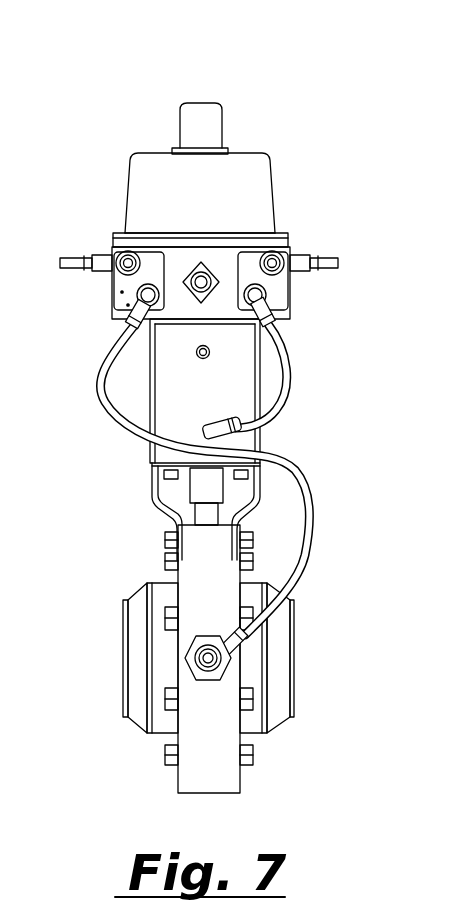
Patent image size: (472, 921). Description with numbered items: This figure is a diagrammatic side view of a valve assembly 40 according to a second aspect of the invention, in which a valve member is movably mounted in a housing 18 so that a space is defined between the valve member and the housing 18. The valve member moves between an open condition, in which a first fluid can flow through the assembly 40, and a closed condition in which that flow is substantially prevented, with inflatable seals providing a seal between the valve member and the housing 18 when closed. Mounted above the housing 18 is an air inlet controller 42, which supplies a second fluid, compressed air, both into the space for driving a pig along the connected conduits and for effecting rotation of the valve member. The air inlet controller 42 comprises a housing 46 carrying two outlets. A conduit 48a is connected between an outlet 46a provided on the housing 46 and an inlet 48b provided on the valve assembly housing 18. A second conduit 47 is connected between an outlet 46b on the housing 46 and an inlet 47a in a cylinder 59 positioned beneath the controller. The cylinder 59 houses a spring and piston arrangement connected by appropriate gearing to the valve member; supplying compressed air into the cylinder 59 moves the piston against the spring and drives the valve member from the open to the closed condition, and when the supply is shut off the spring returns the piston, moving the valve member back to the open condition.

The valve assembly 40 is at (131, 104).
The air inlet controller 42 is at (306, 210).
The housing 46 is at (253, 168).
The outlet 46a is at (132, 308).
The outlet 46b is at (262, 297).
The conduit 47 is at (288, 370).
The inlet 47a is at (245, 433).
The conduit 48a is at (318, 503).
The inlet 48b is at (220, 662).
The cylinder 59 is at (163, 388).
The housing 18 is at (263, 728).